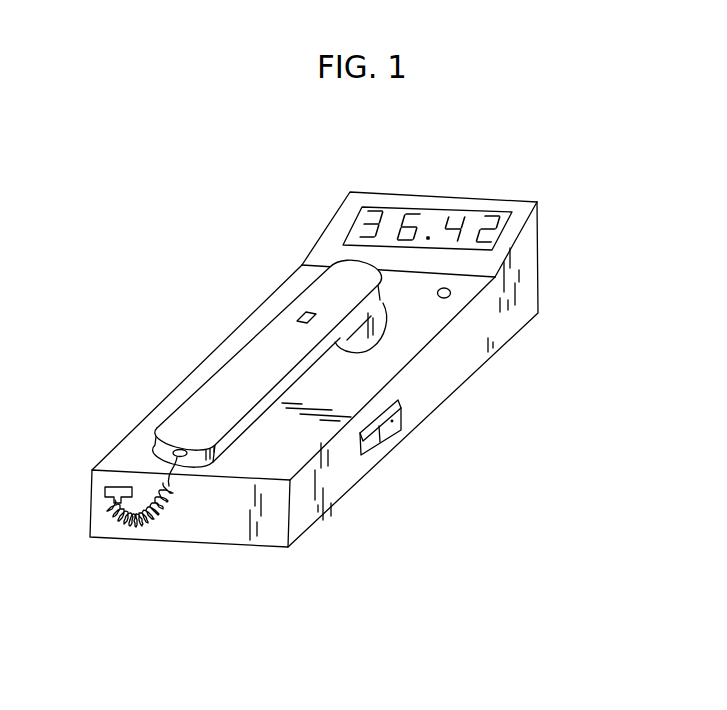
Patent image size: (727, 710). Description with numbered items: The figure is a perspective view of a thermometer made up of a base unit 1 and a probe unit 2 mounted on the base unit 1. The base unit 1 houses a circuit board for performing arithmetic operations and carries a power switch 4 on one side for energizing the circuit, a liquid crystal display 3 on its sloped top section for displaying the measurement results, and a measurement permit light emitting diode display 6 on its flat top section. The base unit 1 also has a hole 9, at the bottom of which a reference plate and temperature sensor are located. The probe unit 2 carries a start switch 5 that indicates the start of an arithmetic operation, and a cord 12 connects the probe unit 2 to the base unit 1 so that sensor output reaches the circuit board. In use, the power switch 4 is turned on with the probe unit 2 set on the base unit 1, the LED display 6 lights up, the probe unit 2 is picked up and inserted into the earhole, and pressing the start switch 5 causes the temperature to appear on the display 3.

The base unit 1 is at (546, 459).
The probe unit 2 is at (235, 396).
The liquid crystal display 3 is at (442, 208).
The power switch 4 is at (368, 440).
The start switch 5 is at (300, 309).
The measurement permit light emitting diode display 6 is at (450, 291).
The hole 9 is at (387, 305).
The cord 12 is at (152, 527).